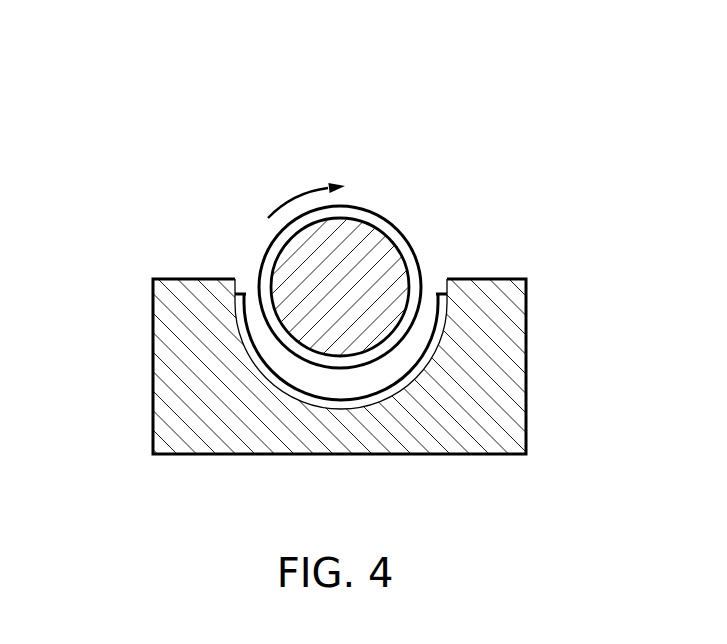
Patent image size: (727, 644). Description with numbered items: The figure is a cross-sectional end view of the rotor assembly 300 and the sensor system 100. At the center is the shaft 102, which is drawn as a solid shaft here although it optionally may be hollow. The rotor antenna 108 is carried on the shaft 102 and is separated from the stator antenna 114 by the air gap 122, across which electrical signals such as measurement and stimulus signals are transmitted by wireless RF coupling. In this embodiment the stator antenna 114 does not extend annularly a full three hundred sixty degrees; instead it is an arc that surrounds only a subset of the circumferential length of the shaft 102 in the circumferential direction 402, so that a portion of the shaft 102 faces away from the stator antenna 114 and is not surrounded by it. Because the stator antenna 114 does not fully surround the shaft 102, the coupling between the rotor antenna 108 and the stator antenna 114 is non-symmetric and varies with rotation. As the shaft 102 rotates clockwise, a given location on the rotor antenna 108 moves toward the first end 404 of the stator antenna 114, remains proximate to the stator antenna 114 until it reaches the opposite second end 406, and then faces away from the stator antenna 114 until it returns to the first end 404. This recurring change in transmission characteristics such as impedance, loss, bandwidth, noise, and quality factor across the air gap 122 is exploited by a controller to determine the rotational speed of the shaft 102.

The sensor system 100 is at (385, 112).
The shaft 102 is at (387, 275).
The rotor antenna 108 is at (396, 221).
The stator antenna 114 is at (278, 394).
The air gap 122 is at (348, 380).
The rotor assembly 300 is at (345, 359).
The circumferential direction 402 is at (294, 185).
The first end 404 is at (437, 292).
The second end 406 is at (240, 290).